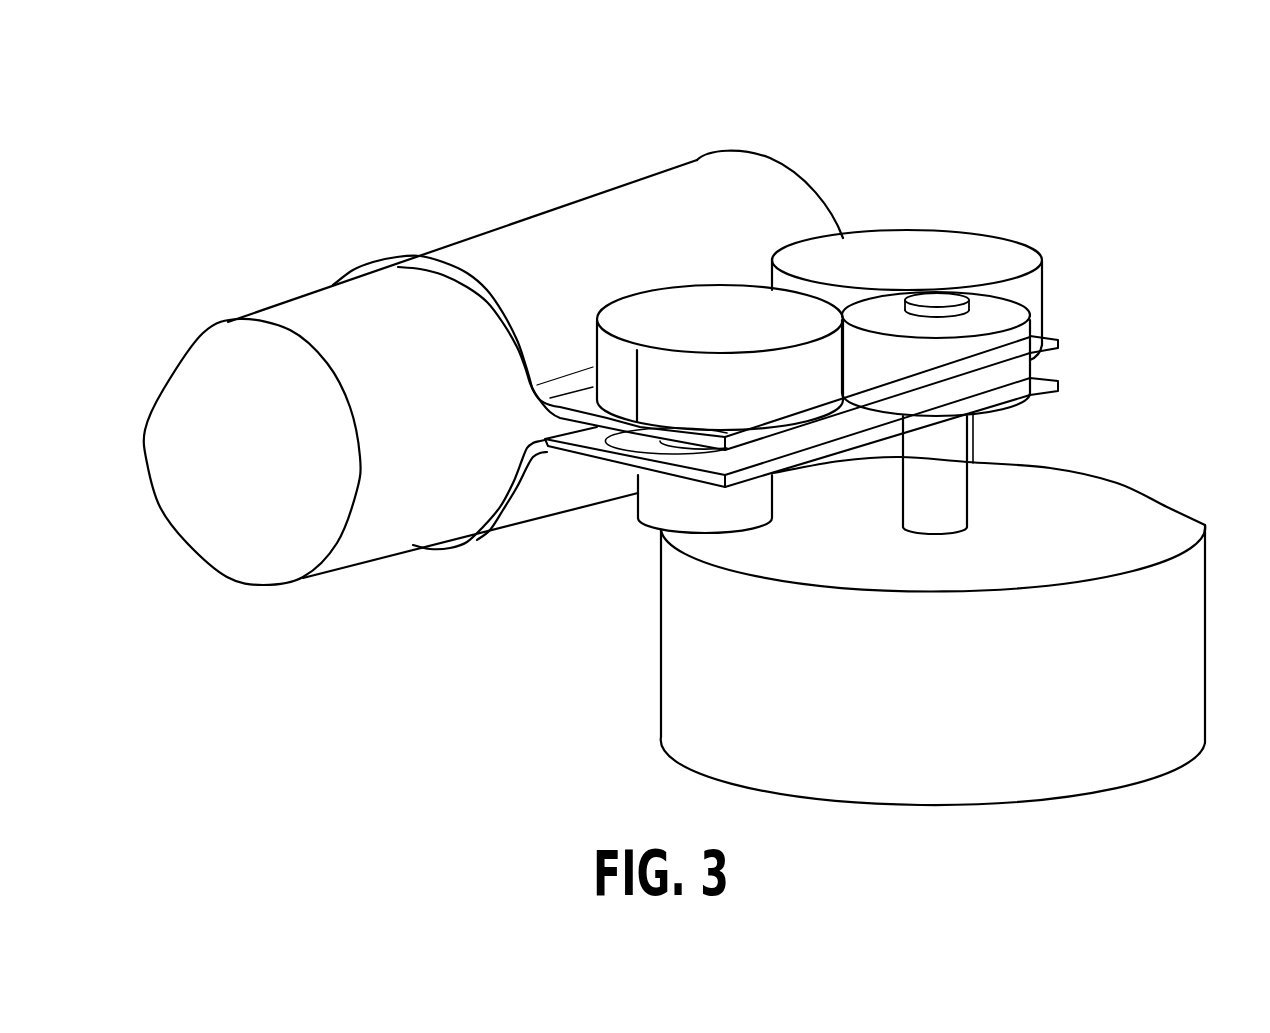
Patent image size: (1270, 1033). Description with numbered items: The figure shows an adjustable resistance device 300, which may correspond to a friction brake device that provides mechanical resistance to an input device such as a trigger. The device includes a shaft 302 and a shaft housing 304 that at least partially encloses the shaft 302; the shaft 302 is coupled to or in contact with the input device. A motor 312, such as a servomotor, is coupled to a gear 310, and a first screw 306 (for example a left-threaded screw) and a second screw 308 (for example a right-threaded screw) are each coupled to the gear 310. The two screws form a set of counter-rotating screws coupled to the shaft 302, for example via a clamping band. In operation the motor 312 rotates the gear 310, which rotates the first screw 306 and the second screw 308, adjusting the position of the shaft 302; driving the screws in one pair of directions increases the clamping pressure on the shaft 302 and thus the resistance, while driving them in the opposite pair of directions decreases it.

The adjustable resistance device 300 is at (202, 208).
The shaft 302 is at (237, 547).
The shaft housing 304 is at (777, 140).
The first screw 306 is at (655, 312).
The second screw 308 is at (997, 256).
The gear 310 is at (1012, 357).
The motor 312 is at (1048, 777).